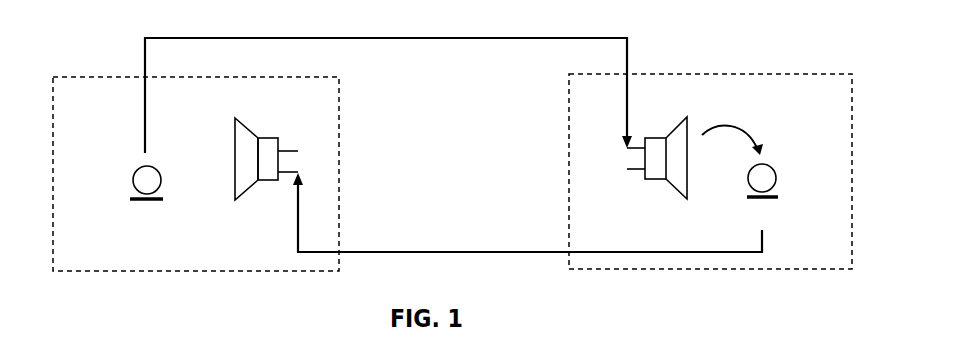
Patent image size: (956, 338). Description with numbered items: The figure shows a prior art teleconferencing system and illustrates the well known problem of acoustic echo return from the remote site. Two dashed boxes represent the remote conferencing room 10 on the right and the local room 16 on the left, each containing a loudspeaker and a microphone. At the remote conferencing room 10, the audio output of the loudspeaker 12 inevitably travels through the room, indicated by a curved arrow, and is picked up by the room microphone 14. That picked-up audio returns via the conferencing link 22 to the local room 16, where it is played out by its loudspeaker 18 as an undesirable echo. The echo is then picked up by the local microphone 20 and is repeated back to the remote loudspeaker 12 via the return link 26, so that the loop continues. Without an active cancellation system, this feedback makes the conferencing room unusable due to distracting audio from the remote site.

The remote conferencing room 10 is at (619, 73).
The loudspeaker 12 is at (689, 128).
The room microphone 14 is at (777, 178).
The local room 16 is at (98, 73).
The loudspeaker 18 is at (235, 162).
The microphone 20 is at (133, 181).
The conferencing link 22 is at (445, 253).
The return link 26 is at (387, 37).